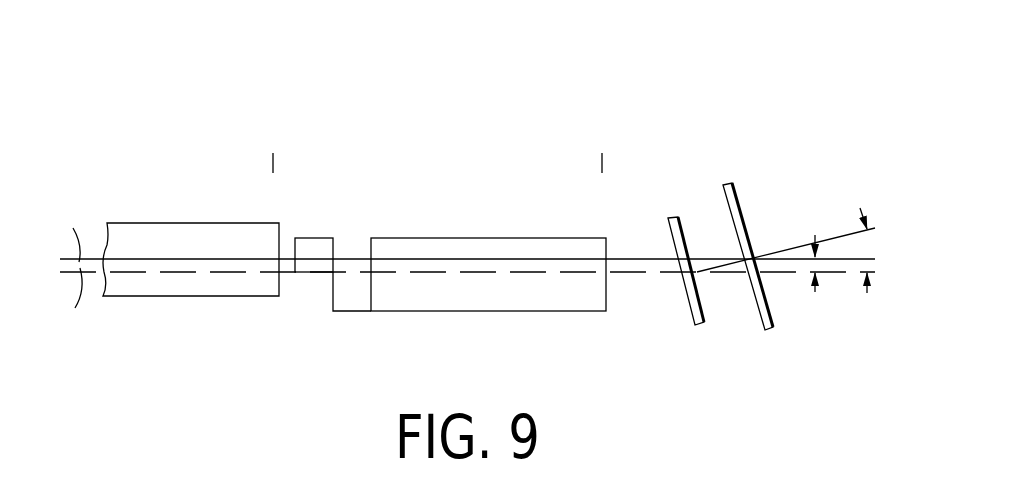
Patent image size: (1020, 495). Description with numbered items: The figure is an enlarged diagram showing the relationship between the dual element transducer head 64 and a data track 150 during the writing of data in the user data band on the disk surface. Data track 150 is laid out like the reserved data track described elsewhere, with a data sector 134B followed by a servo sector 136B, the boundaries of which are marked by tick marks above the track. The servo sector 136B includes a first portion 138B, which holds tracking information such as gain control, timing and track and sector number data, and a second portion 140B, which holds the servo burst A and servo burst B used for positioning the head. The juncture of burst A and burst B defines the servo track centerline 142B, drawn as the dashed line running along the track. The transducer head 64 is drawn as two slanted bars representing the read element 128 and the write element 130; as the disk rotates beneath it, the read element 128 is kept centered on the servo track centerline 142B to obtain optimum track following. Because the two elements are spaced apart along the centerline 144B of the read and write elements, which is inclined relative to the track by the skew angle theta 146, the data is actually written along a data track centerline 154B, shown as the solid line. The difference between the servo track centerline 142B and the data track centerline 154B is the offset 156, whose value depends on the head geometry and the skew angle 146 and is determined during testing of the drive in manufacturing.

The data track 150 is at (163, 92).
The data sector 134B is at (163, 152).
The servo sector 136B is at (412, 152).
The first portion 138B is at (433, 328).
The second portion 140B is at (313, 312).
The servo track centerline 142B is at (332, 273).
The data track centerline 154B is at (459, 232).
The dual element transducer head 64 is at (737, 167).
The read element 128 is at (688, 310).
The write element 130 is at (760, 317).
The centerline of read element and write element 144B is at (783, 248).
The skew angle 146 is at (861, 256).
The offset 156 is at (815, 292).